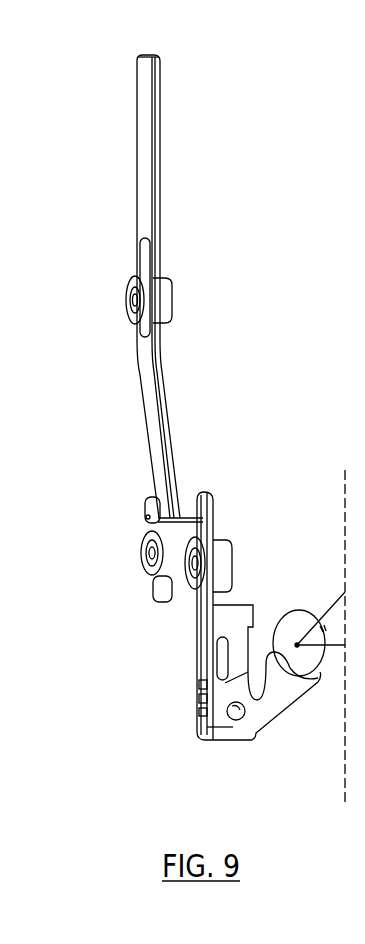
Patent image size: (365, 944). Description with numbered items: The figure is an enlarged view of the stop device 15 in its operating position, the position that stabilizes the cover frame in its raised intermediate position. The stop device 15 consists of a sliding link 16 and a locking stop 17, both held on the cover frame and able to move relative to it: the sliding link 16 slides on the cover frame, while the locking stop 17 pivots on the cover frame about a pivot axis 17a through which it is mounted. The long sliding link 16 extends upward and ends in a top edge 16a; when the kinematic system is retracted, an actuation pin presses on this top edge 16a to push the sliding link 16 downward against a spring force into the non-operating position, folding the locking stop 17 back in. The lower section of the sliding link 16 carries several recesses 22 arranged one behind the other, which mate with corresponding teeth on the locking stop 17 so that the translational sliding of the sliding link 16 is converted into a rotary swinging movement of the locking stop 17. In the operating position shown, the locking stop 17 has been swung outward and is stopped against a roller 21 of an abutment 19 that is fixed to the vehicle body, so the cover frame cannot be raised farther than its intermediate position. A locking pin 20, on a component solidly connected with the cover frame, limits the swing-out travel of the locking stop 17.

The stop device 15 is at (200, 470).
The sliding link 16 is at (152, 432).
The top edge of sliding link 16a is at (167, 63).
The locking stop 17 is at (287, 705).
The pivot axis 17a is at (232, 727).
The abutment 19 is at (307, 610).
The locking pin 20 is at (257, 733).
The roller 21 is at (285, 627).
The recesses 22 is at (193, 683).